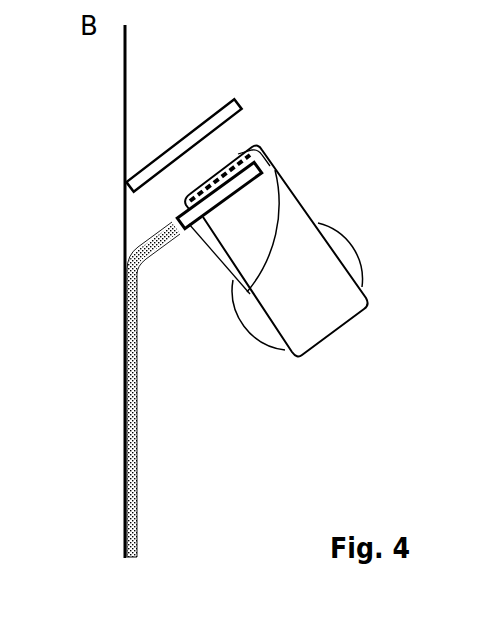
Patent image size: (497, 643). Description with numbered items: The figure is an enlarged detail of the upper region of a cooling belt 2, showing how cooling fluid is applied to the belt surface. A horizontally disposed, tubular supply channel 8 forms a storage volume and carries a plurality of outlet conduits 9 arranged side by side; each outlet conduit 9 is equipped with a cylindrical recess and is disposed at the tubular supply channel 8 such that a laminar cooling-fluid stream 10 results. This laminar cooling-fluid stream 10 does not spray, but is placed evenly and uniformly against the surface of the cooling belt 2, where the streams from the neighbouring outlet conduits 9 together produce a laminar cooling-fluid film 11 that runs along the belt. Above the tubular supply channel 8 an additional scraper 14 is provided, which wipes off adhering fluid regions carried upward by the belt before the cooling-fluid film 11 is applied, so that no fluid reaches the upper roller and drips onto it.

The cooling belt 2 is at (124, 113).
The tubular supply channel 8 is at (262, 225).
The outlet conduit 9 is at (185, 229).
The laminar cooling-fluid stream 10 is at (158, 233).
The laminar cooling-fluid film 11 is at (140, 541).
The scraper 14 is at (185, 146).